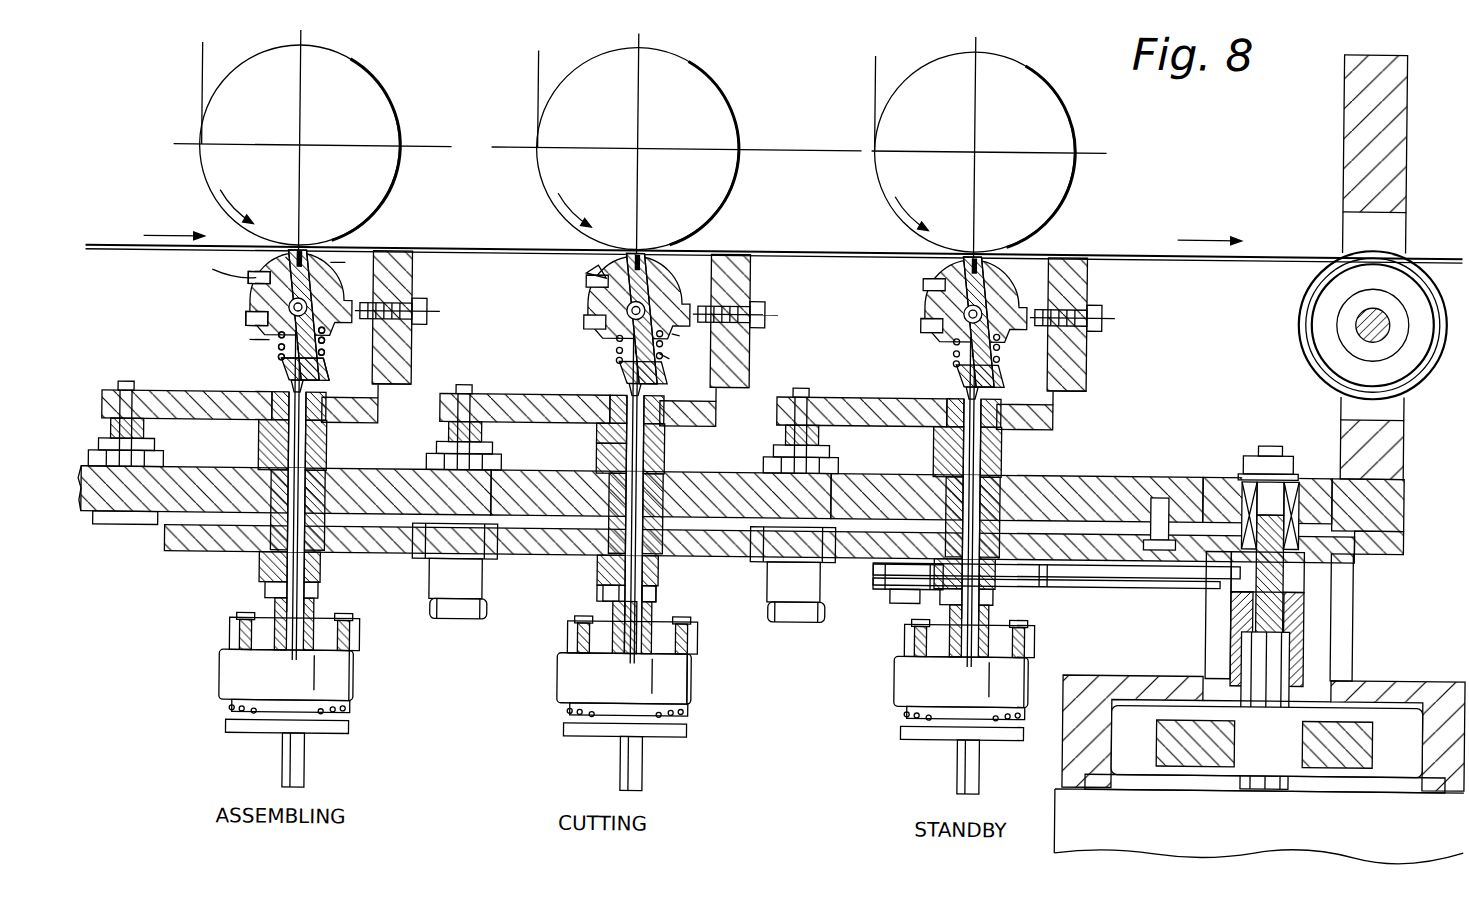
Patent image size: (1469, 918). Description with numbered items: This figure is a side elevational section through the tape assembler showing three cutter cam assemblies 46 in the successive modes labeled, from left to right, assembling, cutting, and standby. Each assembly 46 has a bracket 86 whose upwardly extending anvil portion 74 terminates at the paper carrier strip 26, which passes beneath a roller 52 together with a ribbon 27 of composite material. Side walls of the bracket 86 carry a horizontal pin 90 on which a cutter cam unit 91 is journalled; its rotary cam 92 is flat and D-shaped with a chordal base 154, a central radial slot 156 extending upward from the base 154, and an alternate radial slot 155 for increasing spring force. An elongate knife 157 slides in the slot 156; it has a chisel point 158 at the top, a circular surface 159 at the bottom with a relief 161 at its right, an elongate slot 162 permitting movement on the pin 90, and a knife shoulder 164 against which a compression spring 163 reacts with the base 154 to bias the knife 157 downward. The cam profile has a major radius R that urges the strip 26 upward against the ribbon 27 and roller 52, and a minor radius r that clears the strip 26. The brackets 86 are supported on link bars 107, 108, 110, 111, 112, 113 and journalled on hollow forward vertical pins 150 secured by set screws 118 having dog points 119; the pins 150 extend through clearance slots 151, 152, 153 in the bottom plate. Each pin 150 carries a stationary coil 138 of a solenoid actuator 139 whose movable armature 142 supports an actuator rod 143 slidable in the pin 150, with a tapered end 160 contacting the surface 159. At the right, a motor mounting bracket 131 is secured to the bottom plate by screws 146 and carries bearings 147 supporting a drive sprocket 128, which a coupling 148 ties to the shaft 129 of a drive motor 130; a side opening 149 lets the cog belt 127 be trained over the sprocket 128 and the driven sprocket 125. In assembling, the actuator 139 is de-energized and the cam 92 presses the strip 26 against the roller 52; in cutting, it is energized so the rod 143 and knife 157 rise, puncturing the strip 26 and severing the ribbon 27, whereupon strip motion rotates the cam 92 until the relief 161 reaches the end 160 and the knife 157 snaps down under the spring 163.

The carrier strip 26 is at (113, 247).
The ribbon 27 is at (200, 77).
The cutter cam assembly 46 is at (172, 301).
The roller 52 is at (395, 108).
The anvil portion 74 is at (412, 262).
The bracket 86 is at (183, 403).
The horizontal pin 90 is at (672, 334).
The cutter cam unit 91 is at (238, 291).
The rotary cam 92 is at (245, 326).
The first rigid link bar 107 is at (668, 438).
The second link bar 108 is at (482, 435).
The front link bar 110 is at (330, 452).
The rear link bar 111 is at (146, 438).
The front link bar 112 is at (1006, 445).
The rear link bar 113 is at (828, 436).
The set screw 118 is at (607, 434).
The dog point 119 is at (612, 449).
The driven sprocket 125 is at (1046, 584).
The cog belt 127 is at (1112, 580).
The drive sprocket 128 is at (1308, 565).
The motor shaft 129 is at (1300, 692).
The drive motor 130 is at (1258, 823).
The motor mounting bracket 131 is at (1356, 637).
The stationary coil 138 is at (700, 690).
The solenoid actuator 139 is at (265, 684).
The movable armature 142 is at (654, 645).
The actuator rod 143 is at (660, 590).
The screws 146 is at (1155, 500).
The bearings 147 is at (1240, 470).
The coupling 148 is at (1309, 595).
The side opening 149 is at (1200, 660).
The hollow forward vertical pin 150 is at (325, 563).
The clearance slot 151 is at (342, 486).
The clearance slot 152 is at (700, 490).
The clearance slot 153 is at (1047, 490).
The cam base 154 is at (253, 347).
The alternate radial slot 155 is at (591, 270).
The central radial slot 156 is at (285, 257).
The knife 157 is at (335, 262).
The chisel point 158 is at (300, 256).
The circular surface 159 is at (278, 372).
The tapered end 160 is at (340, 410).
The relief 161 is at (328, 372).
The elongate slot 162 is at (665, 349).
The compression spring 163 is at (277, 340).
The knife shoulder 164 is at (323, 346).